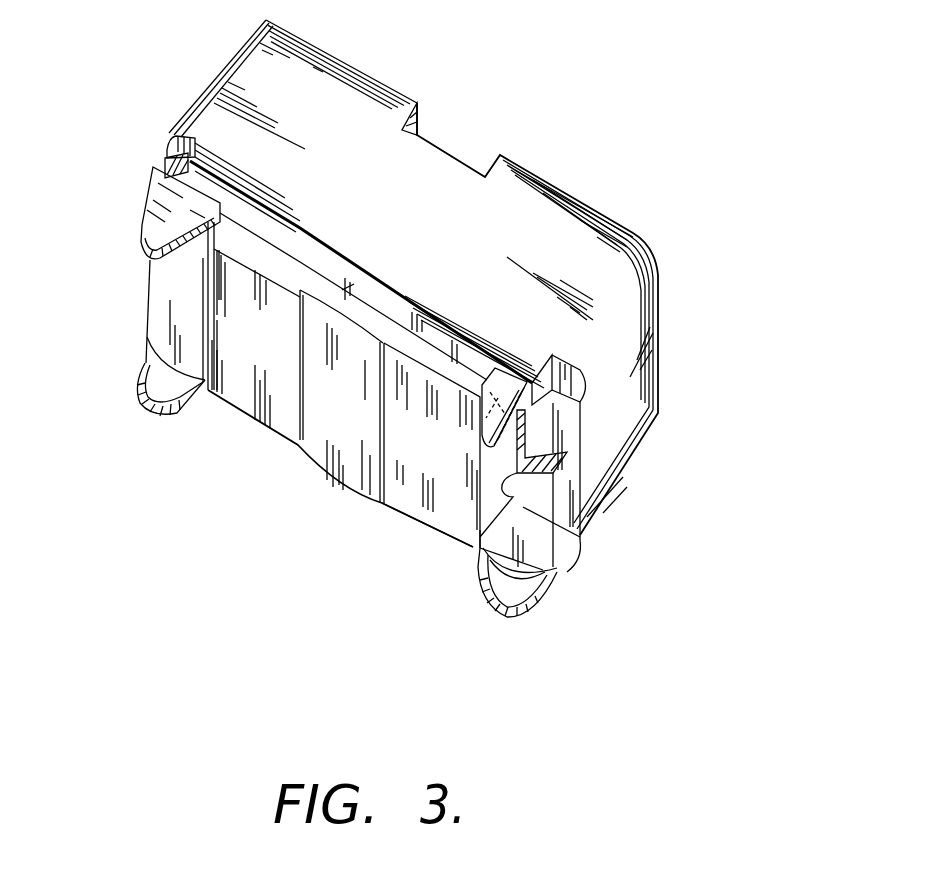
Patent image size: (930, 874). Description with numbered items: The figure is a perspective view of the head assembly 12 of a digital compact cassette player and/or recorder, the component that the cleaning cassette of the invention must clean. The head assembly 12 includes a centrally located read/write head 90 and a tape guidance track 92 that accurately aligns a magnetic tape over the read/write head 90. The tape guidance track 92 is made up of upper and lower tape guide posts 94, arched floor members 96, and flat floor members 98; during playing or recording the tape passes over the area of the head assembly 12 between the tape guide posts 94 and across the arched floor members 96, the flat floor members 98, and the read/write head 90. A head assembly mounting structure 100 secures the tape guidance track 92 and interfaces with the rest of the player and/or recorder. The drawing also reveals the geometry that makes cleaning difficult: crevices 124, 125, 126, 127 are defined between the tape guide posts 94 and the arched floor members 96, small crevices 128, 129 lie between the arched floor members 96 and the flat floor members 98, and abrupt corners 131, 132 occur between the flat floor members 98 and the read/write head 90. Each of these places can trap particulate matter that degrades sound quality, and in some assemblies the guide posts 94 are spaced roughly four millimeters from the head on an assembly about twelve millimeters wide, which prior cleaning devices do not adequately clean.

The head assembly 12 is at (155, 622).
The read/write head 90 is at (323, 430).
The tape guidance track 92 is at (393, 620).
The tape guide posts 94 is at (145, 187).
The arched floor members 96 is at (162, 307).
The flat floor members 98 is at (242, 402).
The head assembly mounting structure 100 is at (600, 213).
The crevice 124 is at (537, 600).
The crevice 125 is at (487, 543).
The crevice 126 is at (140, 373).
The crevice 127 is at (219, 318).
The crevice 128 is at (470, 530).
The crevice 129 is at (218, 332).
The abrupt corner 131 is at (383, 460).
The abrupt corner 132 is at (302, 367).